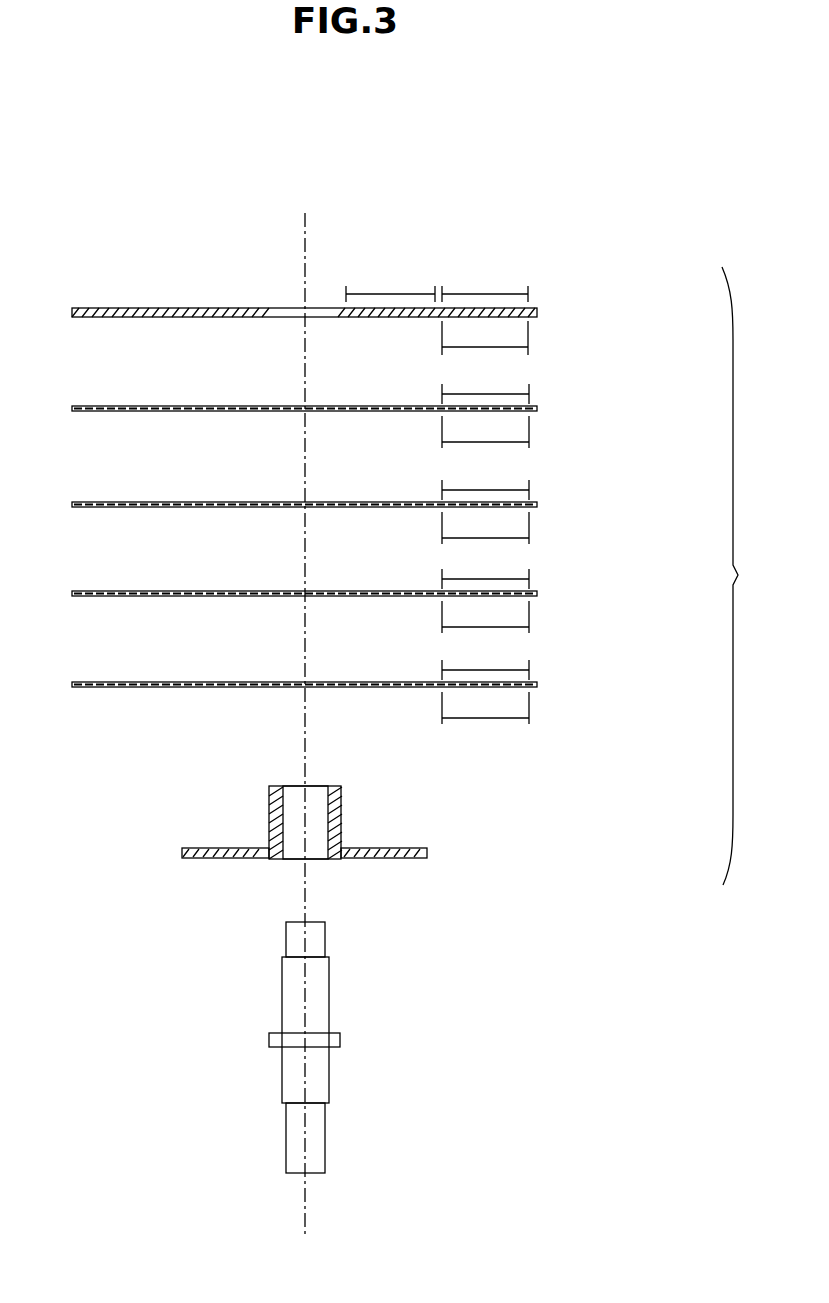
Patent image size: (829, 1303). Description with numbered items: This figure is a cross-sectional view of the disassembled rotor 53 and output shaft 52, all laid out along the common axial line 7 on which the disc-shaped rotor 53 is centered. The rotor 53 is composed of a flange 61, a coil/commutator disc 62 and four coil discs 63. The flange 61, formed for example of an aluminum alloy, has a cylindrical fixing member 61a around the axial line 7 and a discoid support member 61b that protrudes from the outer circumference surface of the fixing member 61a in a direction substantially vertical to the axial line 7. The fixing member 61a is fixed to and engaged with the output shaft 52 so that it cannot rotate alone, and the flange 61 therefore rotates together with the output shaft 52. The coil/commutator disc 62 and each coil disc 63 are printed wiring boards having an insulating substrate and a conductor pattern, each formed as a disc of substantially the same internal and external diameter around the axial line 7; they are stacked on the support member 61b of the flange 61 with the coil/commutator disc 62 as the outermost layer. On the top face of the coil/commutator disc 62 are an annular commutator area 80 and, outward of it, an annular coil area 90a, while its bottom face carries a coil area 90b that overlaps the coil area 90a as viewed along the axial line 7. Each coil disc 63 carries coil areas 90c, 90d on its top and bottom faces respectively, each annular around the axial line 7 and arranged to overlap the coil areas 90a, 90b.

The axial line 7 is at (303, 233).
The output shaft 52 is at (629, 1002).
The rotor 53 is at (755, 576).
The flange 61 is at (445, 820).
The fixing member 61a is at (330, 786).
The support member 61b is at (403, 855).
The coil/commutator disc 62 is at (629, 301).
The coil disc 63 is at (629, 401).
The commutator area 80 is at (390, 286).
The coil area 90a is at (485, 286).
The coil area 90b is at (485, 338).
The coil area 90c is at (485, 526).
The coil area 90d is at (485, 570).